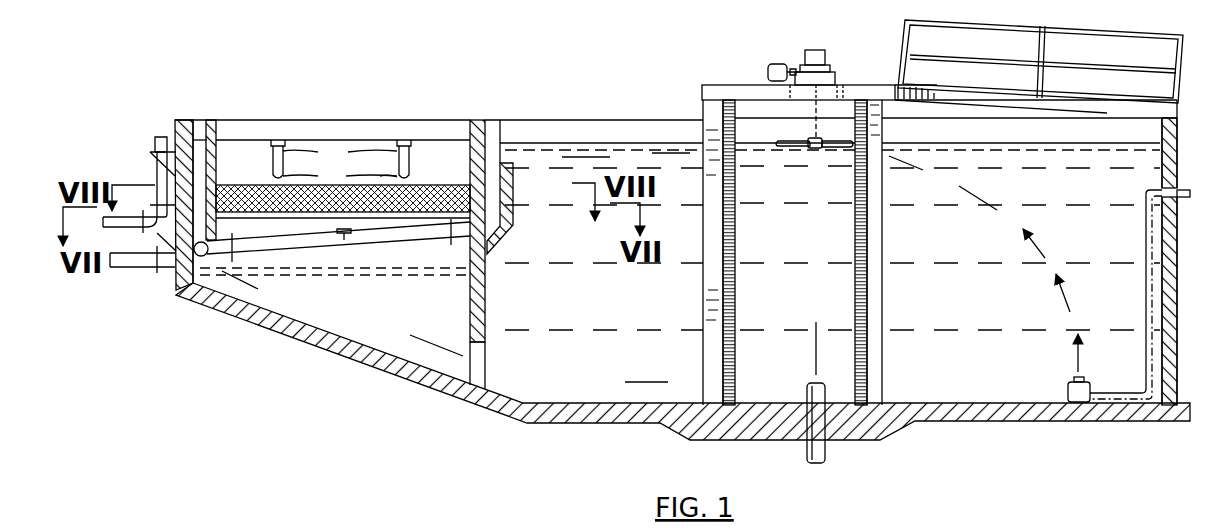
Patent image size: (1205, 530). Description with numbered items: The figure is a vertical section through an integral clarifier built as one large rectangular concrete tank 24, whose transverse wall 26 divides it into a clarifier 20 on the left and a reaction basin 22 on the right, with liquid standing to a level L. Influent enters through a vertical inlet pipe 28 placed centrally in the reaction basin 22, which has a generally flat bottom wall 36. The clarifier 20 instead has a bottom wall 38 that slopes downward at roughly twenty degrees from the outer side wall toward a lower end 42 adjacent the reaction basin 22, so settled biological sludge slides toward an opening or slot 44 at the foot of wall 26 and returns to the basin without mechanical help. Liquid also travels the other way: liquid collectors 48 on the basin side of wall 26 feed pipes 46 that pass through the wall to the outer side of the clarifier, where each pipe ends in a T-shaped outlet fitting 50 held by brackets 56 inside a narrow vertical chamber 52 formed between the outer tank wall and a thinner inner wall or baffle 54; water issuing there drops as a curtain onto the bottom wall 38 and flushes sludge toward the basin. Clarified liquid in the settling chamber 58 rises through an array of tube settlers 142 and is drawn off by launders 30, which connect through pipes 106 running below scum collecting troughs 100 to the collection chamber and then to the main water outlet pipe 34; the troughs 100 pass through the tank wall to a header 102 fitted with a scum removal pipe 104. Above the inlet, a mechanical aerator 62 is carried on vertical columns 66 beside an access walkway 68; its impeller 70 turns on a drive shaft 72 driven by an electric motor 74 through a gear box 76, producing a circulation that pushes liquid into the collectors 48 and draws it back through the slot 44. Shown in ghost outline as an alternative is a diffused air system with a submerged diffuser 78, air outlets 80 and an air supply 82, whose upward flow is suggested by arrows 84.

The clarifier 20 is at (361, 349).
The reaction basin 22 is at (676, 397).
The concrete tank 24 is at (282, 331).
The transverse wall 26 is at (478, 124).
The inlet pipe 28 is at (824, 449).
The launders 30 is at (341, 159).
The main water outlet pipe 34 is at (143, 264).
The bottom wall of reaction basin 36 is at (588, 414).
The clarifier bottom wall 38 is at (424, 369).
The lower end of clarifier bottom wall 42 is at (483, 406).
The opening or slot 44 is at (488, 342).
The pipes 46 is at (400, 236).
The liquid collectors 48 is at (505, 194).
The T-shaped outlet fitting 50 is at (166, 245).
The vertical chamber 52 is at (199, 166).
The inner wall or baffle 54 is at (215, 181).
The brackets 56 is at (194, 292).
The settling chamber 58 is at (368, 296).
The mechanical aerator 62 is at (802, 106).
The vertical columns 66 is at (737, 251).
The access walkway 68 is at (1018, 101).
The impeller 70 is at (843, 148).
The drive shaft 72 is at (814, 129).
The electric motor 74 is at (769, 69).
The gear box 76 is at (808, 52).
The diffuser 78 is at (1068, 388).
The air outlets 80 is at (1076, 378).
The air supply 82 is at (1146, 263).
The ghost outline arrows 84 is at (1037, 243).
The scum collecting troughs 100 is at (362, 140).
The header 102 is at (161, 137).
The scum removal pipe 104 is at (161, 178).
The pipes 106 is at (396, 177).
The tube settlers 142 is at (381, 222).
The liquid level L is at (580, 143).